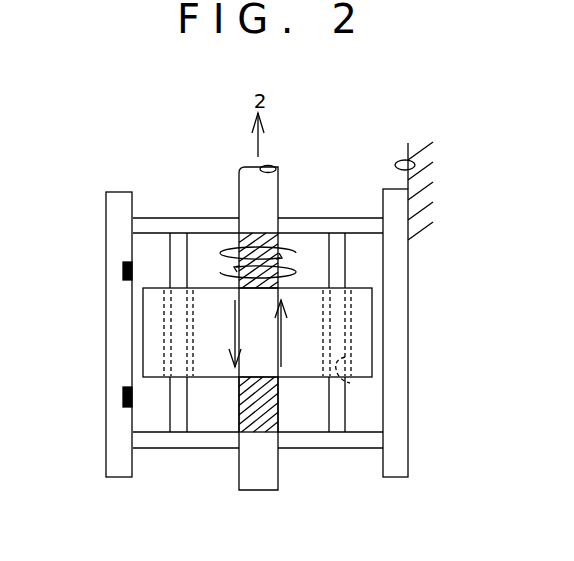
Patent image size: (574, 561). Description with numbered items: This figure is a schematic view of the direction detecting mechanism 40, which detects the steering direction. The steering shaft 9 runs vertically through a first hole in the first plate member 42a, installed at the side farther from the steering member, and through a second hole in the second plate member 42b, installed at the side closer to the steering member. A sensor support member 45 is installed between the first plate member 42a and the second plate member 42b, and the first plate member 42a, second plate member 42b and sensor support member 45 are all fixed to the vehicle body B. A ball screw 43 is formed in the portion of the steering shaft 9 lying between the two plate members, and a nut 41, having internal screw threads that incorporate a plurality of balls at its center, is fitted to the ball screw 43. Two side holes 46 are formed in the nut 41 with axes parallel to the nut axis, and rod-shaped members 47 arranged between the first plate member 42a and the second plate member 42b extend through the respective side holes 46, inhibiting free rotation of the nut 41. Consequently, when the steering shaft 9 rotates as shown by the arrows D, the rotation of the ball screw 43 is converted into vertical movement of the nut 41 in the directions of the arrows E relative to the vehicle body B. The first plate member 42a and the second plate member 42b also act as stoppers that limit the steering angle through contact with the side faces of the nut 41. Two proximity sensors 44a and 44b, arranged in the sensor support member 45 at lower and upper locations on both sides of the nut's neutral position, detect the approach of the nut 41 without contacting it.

The steering shaft 9 is at (262, 189).
The direction detecting mechanism 40 is at (437, 253).
The nut 41 is at (358, 340).
The first plate member 42a is at (358, 440).
The second plate member 42b is at (357, 228).
The ball screw 43 is at (260, 433).
The proximity sensor 44a is at (122, 398).
The proximity sensor 44b is at (122, 273).
The sensor support member 45 is at (117, 337).
The side hole 46 is at (350, 385).
The rod-shaped member 47 is at (335, 266).
The vehicle body B is at (415, 164).